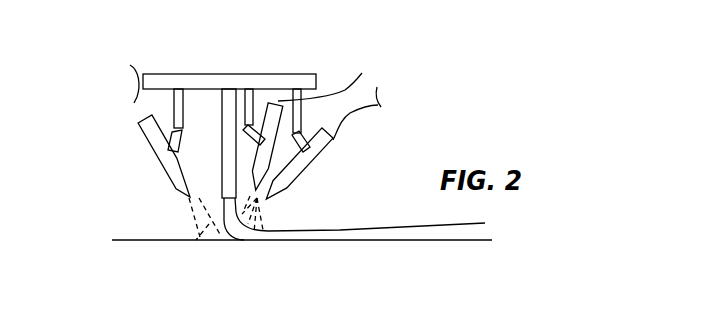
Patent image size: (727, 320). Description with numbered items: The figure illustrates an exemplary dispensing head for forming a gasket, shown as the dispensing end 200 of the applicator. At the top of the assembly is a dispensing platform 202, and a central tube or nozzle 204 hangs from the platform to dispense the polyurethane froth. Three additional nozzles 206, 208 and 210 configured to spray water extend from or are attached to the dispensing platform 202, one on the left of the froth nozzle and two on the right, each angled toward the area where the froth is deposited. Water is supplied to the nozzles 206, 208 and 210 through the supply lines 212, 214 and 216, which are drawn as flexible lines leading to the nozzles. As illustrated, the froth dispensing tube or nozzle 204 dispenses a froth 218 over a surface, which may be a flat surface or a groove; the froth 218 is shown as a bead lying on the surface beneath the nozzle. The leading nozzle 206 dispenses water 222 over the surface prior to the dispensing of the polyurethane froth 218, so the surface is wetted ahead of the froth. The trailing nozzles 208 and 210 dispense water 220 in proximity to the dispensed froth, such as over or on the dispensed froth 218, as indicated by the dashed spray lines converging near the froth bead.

The dispensing end 200 is at (147, 38).
The dispensing platform 202 is at (278, 73).
The froth dispensing tube or nozzle 204 is at (222, 160).
The nozzle 206 is at (160, 161).
The nozzle 208 is at (263, 160).
The nozzle 210 is at (322, 145).
The supply line 212 is at (141, 115).
The supply line 214 is at (357, 82).
The supply line 216 is at (378, 105).
The froth 218 is at (256, 238).
The water 220 is at (258, 205).
The water 222 is at (200, 238).